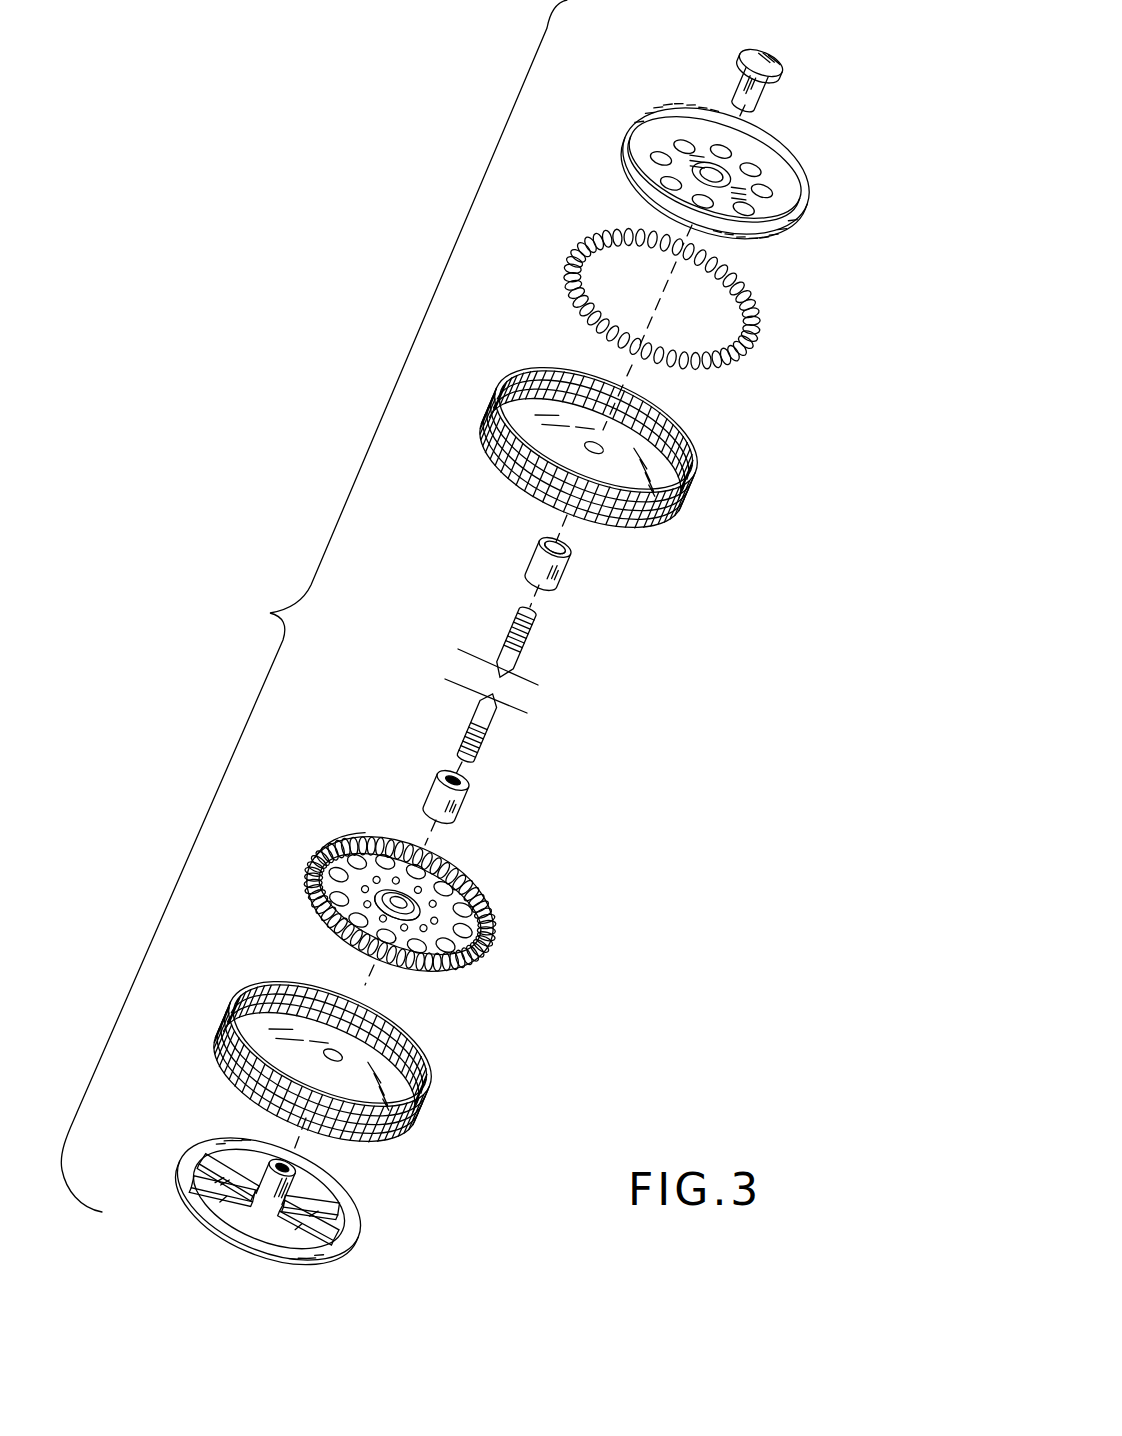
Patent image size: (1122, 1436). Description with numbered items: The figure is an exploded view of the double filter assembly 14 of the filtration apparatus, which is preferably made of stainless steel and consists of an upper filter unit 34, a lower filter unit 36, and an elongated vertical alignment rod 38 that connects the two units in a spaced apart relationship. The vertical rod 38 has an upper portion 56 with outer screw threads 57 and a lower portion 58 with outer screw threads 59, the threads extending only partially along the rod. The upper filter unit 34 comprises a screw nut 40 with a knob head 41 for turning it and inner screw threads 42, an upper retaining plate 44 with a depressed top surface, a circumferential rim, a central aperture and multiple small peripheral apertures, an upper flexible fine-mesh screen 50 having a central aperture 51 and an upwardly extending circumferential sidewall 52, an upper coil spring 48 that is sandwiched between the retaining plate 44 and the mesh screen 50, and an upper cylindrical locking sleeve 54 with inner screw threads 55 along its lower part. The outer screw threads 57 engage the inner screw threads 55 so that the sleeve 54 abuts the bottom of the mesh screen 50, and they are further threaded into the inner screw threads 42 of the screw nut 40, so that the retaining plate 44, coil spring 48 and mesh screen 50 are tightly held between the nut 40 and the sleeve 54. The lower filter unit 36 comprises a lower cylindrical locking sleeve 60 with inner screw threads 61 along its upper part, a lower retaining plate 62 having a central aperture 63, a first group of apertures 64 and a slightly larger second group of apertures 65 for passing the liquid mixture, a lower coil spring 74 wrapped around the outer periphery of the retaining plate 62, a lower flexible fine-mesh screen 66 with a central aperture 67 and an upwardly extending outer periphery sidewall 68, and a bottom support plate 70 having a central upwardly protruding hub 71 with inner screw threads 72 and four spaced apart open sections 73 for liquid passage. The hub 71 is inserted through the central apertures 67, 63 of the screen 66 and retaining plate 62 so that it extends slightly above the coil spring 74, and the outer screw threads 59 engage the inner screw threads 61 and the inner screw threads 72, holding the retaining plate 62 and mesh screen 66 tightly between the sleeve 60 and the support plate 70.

The double filter assembly 14 is at (247, 620).
The upper filter unit 34 is at (832, 140).
The lower filter unit 36 is at (632, 950).
The vertical alignment rod 38 is at (501, 665).
The screw nut 40 is at (773, 62).
The knob head 41 is at (752, 55).
The inner screw threads 42 is at (768, 114).
The upper retaining plate 44 is at (724, 164).
The upper coil spring 48 is at (762, 328).
The upper flexible fine-mesh screen 50 is at (618, 423).
The central aperture 51 is at (597, 444).
The circumferential sidewall 52 is at (498, 452).
The upper cylindrical locking sleeve 54 is at (535, 566).
The inner screw threads 55 is at (557, 593).
The upper portion 56 is at (508, 637).
The outer screw threads 57 is at (520, 643).
The lower portion 58 is at (470, 750).
The outer screw threads 59 is at (485, 738).
The lower cylindrical locking sleeve 60 is at (432, 806).
The inner screw threads 61 is at (456, 782).
The lower retaining plate 62 is at (399, 883).
The central aperture 63 is at (392, 907).
The first group of apertures 64 is at (373, 872).
The second group of apertures 65 is at (472, 920).
The lower flexible fine-mesh screen 66 is at (359, 1054).
The central aperture 67 is at (330, 1052).
The outer periphery sidewall 68 is at (230, 1065).
The bottom support plate 70 is at (300, 1197).
The protruding hub 71 is at (264, 1183).
The inner screw threads 72 is at (292, 1246).
The open sections 73 is at (240, 1165).
The lower coil spring 74 is at (330, 858).